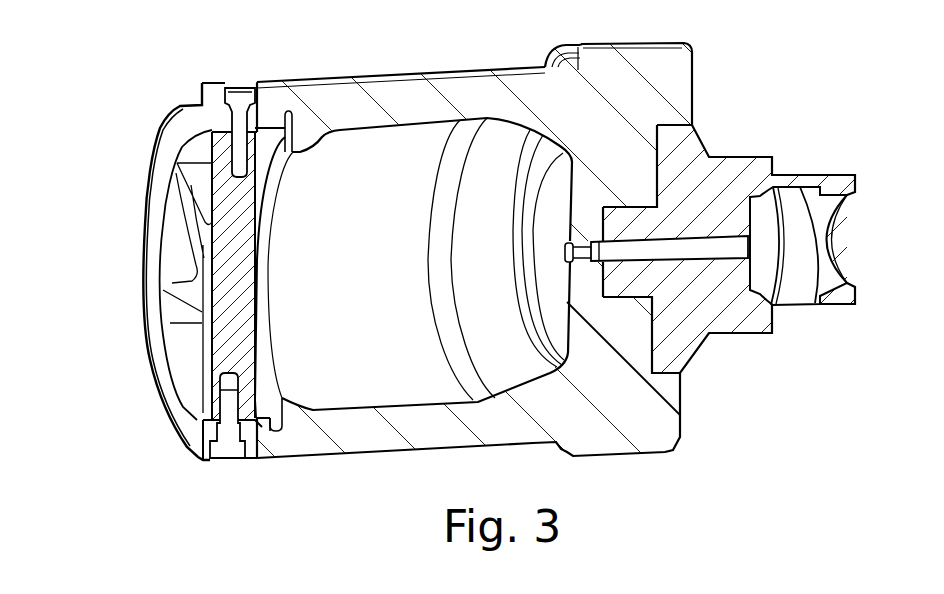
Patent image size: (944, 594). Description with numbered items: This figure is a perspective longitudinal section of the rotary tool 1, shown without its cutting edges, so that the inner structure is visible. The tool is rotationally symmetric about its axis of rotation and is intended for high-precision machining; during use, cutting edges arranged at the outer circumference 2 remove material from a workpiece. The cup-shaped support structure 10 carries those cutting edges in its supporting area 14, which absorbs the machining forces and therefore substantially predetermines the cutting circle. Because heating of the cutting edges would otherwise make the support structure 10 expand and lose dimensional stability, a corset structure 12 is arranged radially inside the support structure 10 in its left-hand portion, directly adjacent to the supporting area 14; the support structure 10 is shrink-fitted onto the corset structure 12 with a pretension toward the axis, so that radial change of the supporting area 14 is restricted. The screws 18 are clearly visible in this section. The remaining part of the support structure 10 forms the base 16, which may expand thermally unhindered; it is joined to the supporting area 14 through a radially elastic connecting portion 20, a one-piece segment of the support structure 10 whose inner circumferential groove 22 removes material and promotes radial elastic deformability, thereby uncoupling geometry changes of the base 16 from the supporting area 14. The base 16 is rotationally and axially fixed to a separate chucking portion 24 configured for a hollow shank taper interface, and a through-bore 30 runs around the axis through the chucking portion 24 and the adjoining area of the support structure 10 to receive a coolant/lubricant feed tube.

The rotary tool 1 is at (112, 66).
The outer circumference 2 is at (266, 84).
The support structure 10 is at (427, 100).
The corset structure 12 is at (163, 290).
The supporting area 14 is at (200, 105).
The base 16 is at (672, 72).
The screws 18 is at (248, 122).
The radially elastic connecting portion 20 is at (298, 103).
The inner circumferential groove 22 is at (294, 133).
The chucking portion 24 is at (737, 153).
The through-bore 30 is at (690, 256).